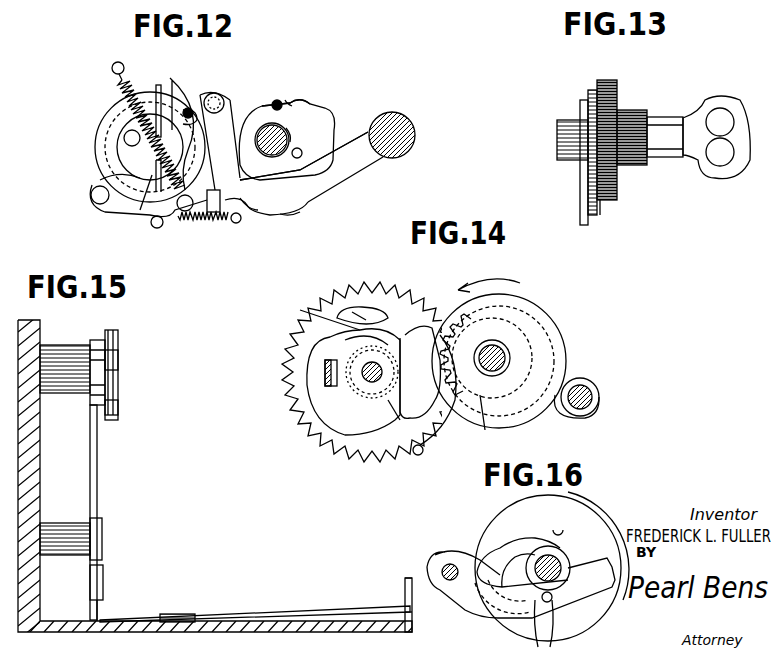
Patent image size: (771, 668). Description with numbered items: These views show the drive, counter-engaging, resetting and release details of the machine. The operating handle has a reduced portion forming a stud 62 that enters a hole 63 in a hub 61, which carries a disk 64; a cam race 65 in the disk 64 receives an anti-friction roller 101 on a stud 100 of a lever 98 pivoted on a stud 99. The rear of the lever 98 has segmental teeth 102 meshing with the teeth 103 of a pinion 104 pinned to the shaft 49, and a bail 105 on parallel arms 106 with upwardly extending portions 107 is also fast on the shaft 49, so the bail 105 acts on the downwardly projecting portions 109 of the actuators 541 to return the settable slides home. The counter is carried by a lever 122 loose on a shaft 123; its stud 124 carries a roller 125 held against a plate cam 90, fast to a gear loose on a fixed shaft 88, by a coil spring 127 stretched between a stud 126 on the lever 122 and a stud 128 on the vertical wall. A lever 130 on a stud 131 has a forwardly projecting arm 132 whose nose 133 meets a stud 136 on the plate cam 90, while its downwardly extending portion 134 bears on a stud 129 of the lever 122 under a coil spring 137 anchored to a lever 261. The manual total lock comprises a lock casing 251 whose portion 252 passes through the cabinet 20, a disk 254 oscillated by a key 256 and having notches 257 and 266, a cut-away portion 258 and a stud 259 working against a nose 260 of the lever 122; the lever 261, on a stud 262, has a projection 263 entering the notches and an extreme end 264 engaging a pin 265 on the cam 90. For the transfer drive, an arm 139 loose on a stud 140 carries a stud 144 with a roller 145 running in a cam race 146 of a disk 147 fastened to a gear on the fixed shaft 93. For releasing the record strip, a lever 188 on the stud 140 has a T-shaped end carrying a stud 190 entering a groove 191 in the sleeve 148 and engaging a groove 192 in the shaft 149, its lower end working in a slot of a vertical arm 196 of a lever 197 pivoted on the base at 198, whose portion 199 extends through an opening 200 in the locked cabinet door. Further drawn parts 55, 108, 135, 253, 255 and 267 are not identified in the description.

In FIG. 15, the cabinet 20 is at (407, 578).
In FIG. 14, the shaft 49 is at (372, 385).
In FIG. 14, the gear 55 is at (288, 344).
In FIG. 14, the hub 61 is at (486, 348).
In FIG. 14, the stud 62 is at (510, 360).
In FIG. 14, the hole 63 is at (482, 372).
In FIG. 14, the disk 64 is at (538, 326).
In FIG. 14, the cam race 65 is at (526, 342).
In FIG. 12, the fixed shaft 88 is at (267, 130).
In FIG. 12, the plate cam 90 is at (342, 120).
In FIG. 13, the plate cam 90 is at (620, 108).
In FIG. 16, the fixed shaft 93 is at (545, 548).
In FIG. 14, the lever 98 is at (558, 416).
In FIG. 14, the stud 99 is at (599, 397).
In FIG. 14, the stud 100 is at (490, 425).
In FIG. 14, the anti-friction roller 101 is at (485, 420).
In FIG. 14, the teeth 102 is at (424, 452).
In FIG. 14, the teeth 103 is at (355, 393).
In FIG. 14, the pinion 104 is at (345, 340).
In FIG. 14, the bail 105 is at (325, 376).
In FIG. 14, the parallel arms 106 is at (334, 388).
In FIG. 14, the upwardly extending portions 107 is at (316, 313).
In FIG. 14, the arm 108 is at (388, 317).
In FIG. 14, the downwardly projecting portions 109 is at (398, 424).
In FIG. 12, the lever 122 is at (345, 178).
In FIG. 13, the lever 122 is at (582, 190).
In FIG. 12, the shaft 123 is at (407, 152).
In FIG. 12, the stud 124 is at (290, 215).
In FIG. 12, the anti-friction roller 125 is at (312, 205).
In FIG. 13, the anti-friction roller 125 is at (604, 208).
In FIG. 12, the stud 126 is at (184, 211).
In FIG. 12, the coil spring 127 is at (118, 82).
In FIG. 12, the stud 128 is at (117, 62).
In FIG. 12, the stud 129 is at (236, 223).
In FIG. 12, the lever 130 is at (232, 98).
In FIG. 13, the lever 130 is at (590, 94).
In FIG. 12, the stud 131 is at (213, 92).
In FIG. 12, the arm 132 is at (284, 96).
In FIG. 12, the nose 133 is at (288, 100).
In FIG. 12, the downwardly extending portion 134 is at (263, 150).
In FIG. 12, the shoulder 135 is at (250, 210).
In FIG. 12, the stud 136 is at (298, 149).
In FIG. 13, the stud 136 is at (588, 165).
In FIG. 12, the coil spring 137 is at (207, 222).
In FIG. 16, the arm 139 is at (470, 600).
In FIG. 15, the stud 140 is at (78, 523).
In FIG. 16, the stud 140 is at (451, 563).
In FIG. 16, the stud 144 is at (554, 625).
In FIG. 16, the anti-friction roller 145 is at (535, 620).
In FIG. 16, the cam race 146 is at (560, 530).
In FIG. 16, the disk 147 is at (505, 540).
In FIG. 15, the sleeve 148 is at (118, 360).
In FIG. 15, the shaft 149 is at (70, 345).
In FIG. 15, the lever 188 is at (98, 461).
In FIG. 15, the stud 190 is at (119, 418).
In FIG. 15, the groove 191 is at (115, 330).
In FIG. 15, the groove 192 is at (97, 340).
In FIG. 15, the arm 196 is at (104, 596).
In FIG. 15, the lever 197 is at (225, 612).
In FIG. 15, the pivot 198 is at (175, 614).
In FIG. 15, the portion 199 is at (413, 612).
In FIG. 15, the opening 200 is at (405, 598).
In FIG. 12, the lock casing 251 is at (100, 126).
In FIG. 13, the lock casing 251 is at (610, 85).
In FIG. 12, the portion 252 is at (174, 105).
In FIG. 13, the portion 252 is at (642, 118).
In FIG. 12, the pin 253 is at (190, 108).
In FIG. 12, the disk 254 is at (117, 160).
In FIG. 12, the bar 255 is at (159, 85).
In FIG. 13, the key 256 is at (700, 172).
In FIG. 12, the notch 257 is at (115, 215).
In FIG. 12, the cut away portion 258 is at (268, 96).
In FIG. 12, the stud 259 is at (112, 112).
In FIG. 12, the nose 260 is at (100, 182).
In FIG. 12, the lever 261 is at (110, 212).
In FIG. 12, the stud 262 is at (91, 198).
In FIG. 12, the projection 263 is at (146, 208).
In FIG. 12, the extreme end 264 is at (322, 165).
In FIG. 12, the pin 265 is at (303, 125).
In FIG. 12, the notch 266 is at (123, 141).
In FIG. 12, the lug 267 is at (181, 122).
In FIG. 14, the actuators 541 is at (455, 312).